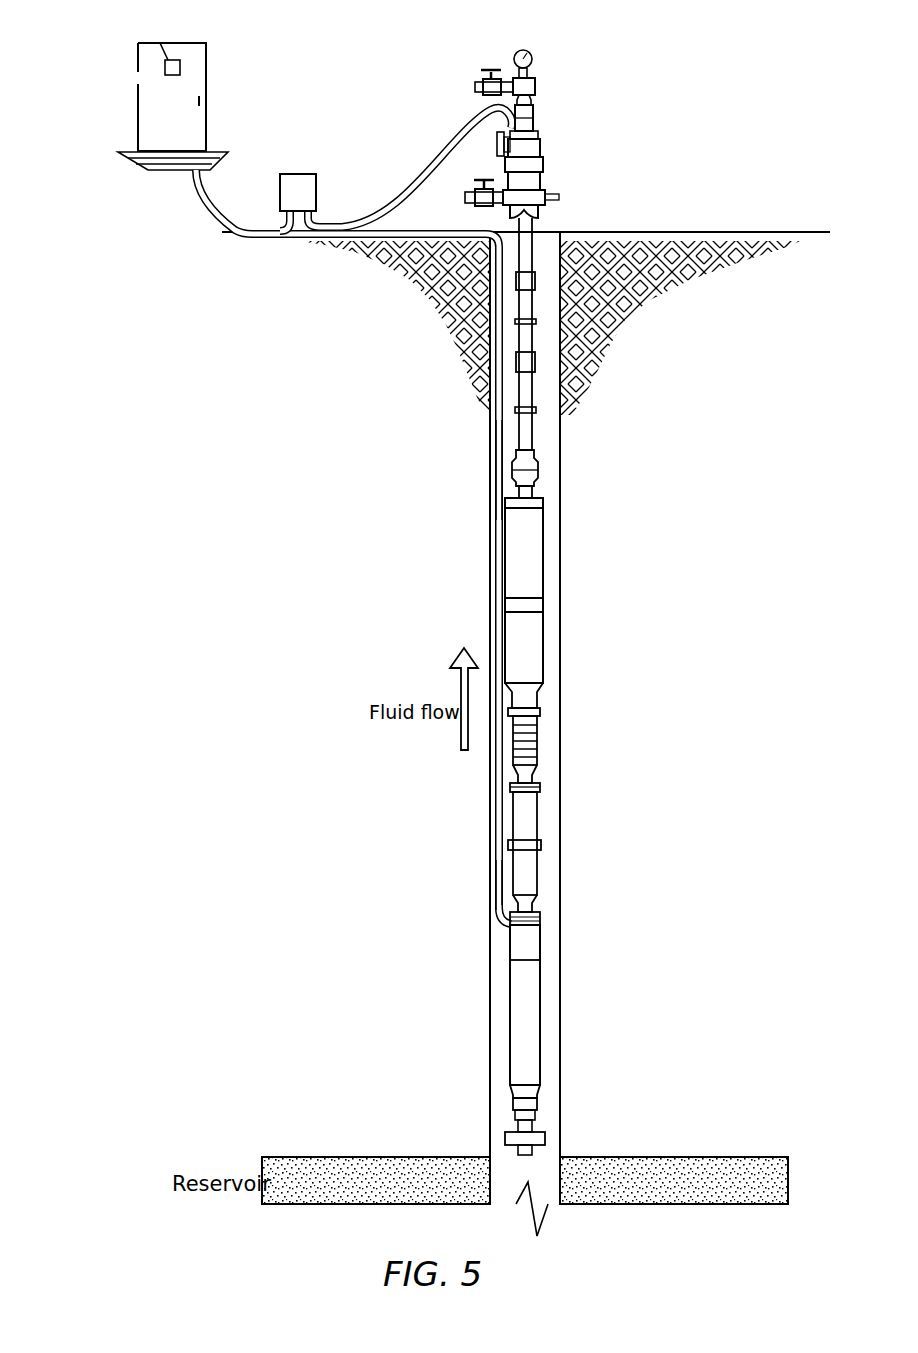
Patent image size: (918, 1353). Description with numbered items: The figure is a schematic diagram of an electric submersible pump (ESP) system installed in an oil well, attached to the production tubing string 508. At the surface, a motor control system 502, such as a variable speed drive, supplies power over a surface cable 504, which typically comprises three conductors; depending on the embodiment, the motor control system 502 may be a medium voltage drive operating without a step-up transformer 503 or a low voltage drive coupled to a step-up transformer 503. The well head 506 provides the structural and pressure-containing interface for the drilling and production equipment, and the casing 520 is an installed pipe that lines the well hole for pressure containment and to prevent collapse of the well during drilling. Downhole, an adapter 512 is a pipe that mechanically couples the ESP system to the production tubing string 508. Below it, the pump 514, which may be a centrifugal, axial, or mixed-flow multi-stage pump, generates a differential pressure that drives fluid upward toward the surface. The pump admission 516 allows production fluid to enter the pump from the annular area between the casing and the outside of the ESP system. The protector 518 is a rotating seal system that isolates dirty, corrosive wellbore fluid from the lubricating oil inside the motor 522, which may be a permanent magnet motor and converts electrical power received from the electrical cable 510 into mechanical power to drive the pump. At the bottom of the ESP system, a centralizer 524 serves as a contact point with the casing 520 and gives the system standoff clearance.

The motor control system 502 is at (120, 103).
The step-up transformer 503 is at (298, 172).
The surface cable 504 is at (208, 204).
The well head 506 is at (546, 163).
The production tubing string 508 is at (536, 277).
The electrical cable 510 is at (499, 452).
The adapter 512 is at (538, 465).
The pump 514 is at (545, 568).
The pump admission 516 is at (538, 735).
The protector 518 is at (538, 815).
The casing 520 is at (490, 944).
The motor 522 is at (540, 985).
The centralizer 524 is at (546, 1135).